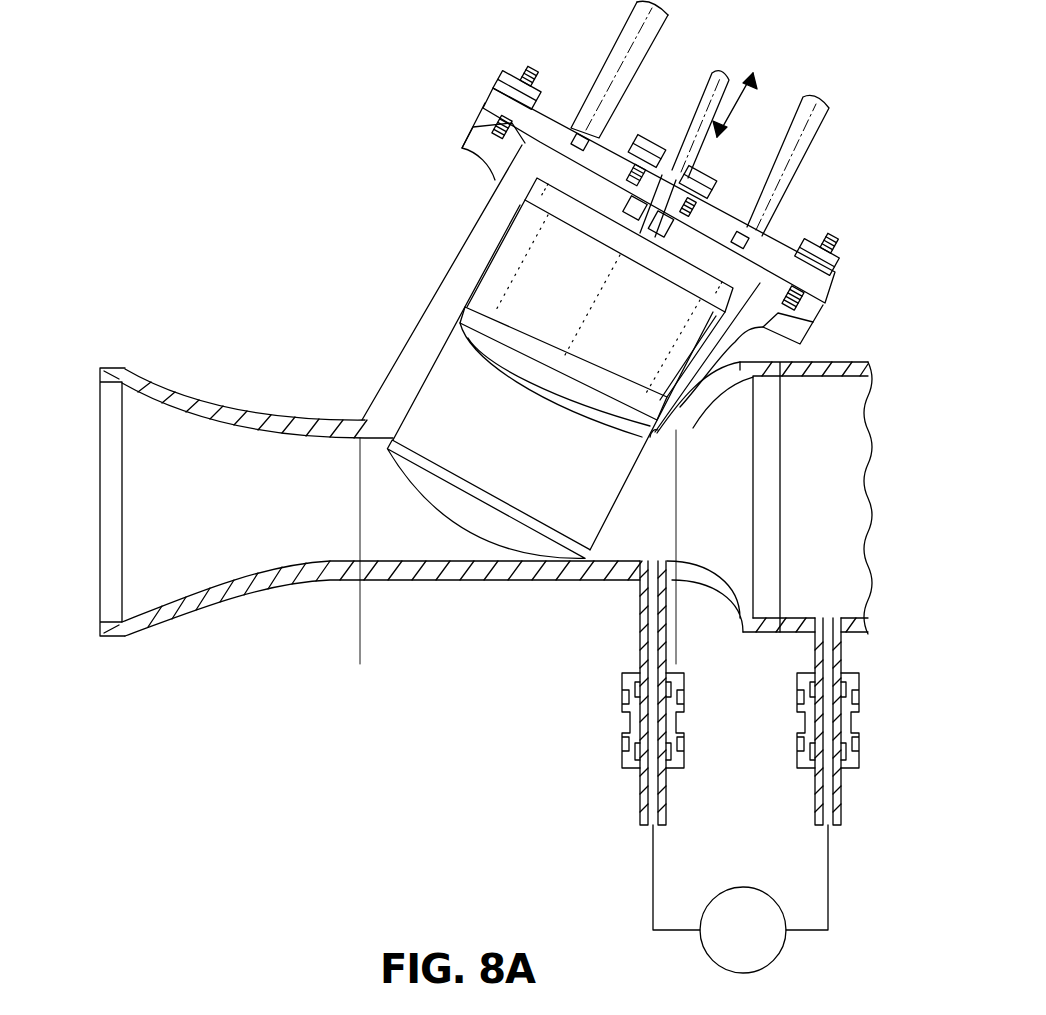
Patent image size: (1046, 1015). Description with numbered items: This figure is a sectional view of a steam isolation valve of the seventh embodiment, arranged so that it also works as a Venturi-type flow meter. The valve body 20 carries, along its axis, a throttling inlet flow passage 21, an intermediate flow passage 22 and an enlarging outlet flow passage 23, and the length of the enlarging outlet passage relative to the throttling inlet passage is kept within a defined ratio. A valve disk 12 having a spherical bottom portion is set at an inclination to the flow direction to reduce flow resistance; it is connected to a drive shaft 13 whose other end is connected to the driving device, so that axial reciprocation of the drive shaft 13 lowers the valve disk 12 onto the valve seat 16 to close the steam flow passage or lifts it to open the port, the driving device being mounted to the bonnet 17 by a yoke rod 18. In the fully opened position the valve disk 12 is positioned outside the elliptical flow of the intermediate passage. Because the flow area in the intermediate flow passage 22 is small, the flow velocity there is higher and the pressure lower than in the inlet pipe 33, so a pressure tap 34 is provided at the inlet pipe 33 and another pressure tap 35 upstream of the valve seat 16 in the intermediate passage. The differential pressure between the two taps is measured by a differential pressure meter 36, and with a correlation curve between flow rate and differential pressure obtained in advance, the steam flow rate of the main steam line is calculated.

The valve disk 12 is at (510, 258).
The drive shaft 13 is at (694, 122).
The valve seat 16 is at (400, 432).
The bonnet 17 is at (503, 102).
The yoke rod 18 is at (622, 45).
The valve body 20 is at (418, 357).
The throttling inlet flow passage 21 is at (676, 652).
The intermediate flow passage 22 is at (676, 652).
The enlarging outlet flow passage 23 is at (100, 652).
The inlet pipe 33 is at (853, 361).
The pressure tap 34 is at (838, 650).
The pressure tap 35 is at (662, 600).
The differential pressure meter 36 is at (742, 887).